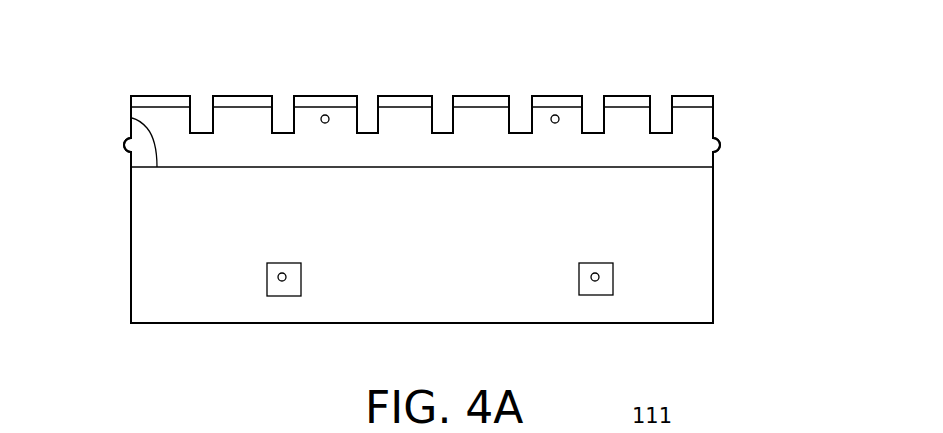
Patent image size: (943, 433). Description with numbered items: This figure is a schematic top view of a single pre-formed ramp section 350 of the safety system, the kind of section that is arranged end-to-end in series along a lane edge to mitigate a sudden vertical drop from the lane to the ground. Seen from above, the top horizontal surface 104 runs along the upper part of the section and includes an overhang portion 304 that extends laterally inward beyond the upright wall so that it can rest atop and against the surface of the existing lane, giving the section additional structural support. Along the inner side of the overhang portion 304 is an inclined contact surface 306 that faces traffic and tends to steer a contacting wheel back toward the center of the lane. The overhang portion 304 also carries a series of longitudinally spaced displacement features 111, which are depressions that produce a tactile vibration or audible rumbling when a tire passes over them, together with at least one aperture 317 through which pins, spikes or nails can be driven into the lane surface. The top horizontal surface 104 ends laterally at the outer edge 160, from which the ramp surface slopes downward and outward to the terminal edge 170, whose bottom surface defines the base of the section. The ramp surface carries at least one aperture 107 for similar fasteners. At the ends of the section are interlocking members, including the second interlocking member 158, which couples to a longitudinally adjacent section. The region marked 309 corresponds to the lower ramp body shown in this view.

The ramp section 350 is at (742, 275).
The overhang portion 304 is at (693, 113).
The inclined contact surface 306 is at (227, 95).
The aperture 317 is at (555, 115).
The displacement feature 111 is at (654, 93).
The outer edge 160 is at (132, 118).
The second interlocking member 158 is at (125, 143).
The top horizontal surface 104 is at (663, 147).
The lower body 309 is at (672, 233).
The terminal edge 170 is at (185, 323).
The aperture 107 is at (591, 277).